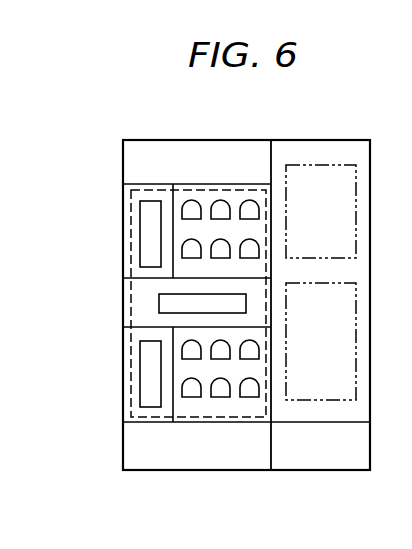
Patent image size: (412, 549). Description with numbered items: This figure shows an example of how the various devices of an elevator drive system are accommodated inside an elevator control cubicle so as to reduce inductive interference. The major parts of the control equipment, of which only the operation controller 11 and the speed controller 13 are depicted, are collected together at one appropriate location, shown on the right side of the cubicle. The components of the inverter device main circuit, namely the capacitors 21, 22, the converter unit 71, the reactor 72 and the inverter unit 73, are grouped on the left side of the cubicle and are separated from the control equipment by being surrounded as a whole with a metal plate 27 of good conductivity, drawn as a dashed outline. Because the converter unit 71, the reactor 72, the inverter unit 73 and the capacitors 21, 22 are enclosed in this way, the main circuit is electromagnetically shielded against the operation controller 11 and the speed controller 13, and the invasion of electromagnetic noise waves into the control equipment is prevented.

The operation controller 11 is at (342, 340).
The speed controller 13 is at (342, 200).
The capacitor 21 is at (150, 238).
The capacitor 22 is at (150, 392).
The metal plate 27 is at (156, 417).
The converter unit 71 is at (212, 192).
The reactor 72 is at (160, 302).
The inverter unit 73 is at (212, 410).